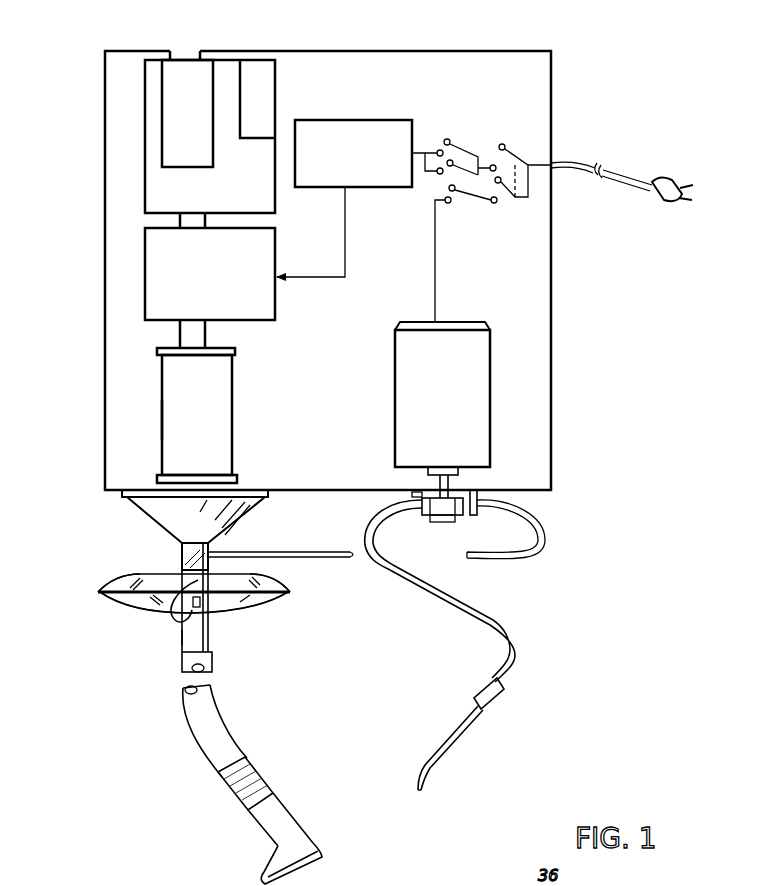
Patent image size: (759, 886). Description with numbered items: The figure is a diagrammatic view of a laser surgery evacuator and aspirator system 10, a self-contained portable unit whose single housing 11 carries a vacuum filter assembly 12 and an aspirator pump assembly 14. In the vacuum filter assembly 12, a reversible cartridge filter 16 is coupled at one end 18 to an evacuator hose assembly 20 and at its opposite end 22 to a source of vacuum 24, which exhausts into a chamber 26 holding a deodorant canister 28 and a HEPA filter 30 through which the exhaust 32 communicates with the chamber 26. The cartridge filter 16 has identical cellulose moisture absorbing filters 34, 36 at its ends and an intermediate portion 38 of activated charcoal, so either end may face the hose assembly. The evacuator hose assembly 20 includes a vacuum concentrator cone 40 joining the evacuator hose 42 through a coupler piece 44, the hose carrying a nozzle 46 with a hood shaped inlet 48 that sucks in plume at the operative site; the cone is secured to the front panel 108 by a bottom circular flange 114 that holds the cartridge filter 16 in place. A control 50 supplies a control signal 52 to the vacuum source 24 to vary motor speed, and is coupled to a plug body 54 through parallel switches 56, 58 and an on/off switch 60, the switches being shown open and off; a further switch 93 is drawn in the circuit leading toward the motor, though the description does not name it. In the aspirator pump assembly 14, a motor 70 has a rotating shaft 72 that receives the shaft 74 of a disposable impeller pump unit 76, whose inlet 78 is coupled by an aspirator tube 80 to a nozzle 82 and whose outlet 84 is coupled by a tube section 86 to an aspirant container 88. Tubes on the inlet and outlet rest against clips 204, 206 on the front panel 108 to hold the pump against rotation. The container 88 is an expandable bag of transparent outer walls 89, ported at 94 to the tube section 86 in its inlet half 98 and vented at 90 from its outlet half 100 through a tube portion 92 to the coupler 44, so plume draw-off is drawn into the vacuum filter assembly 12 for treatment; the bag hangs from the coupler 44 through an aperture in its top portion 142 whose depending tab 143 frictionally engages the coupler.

The laser surgery evacuator and aspirator system 10 is at (623, 647).
The housing 11 is at (557, 343).
The vacuum filter assembly 12 is at (304, 293).
The aspirator pump assembly 14 is at (500, 476).
The reversible cartridge filter 16 is at (250, 410).
The end of cartridge filter 18 is at (243, 481).
The evacuator hose assembly 20 is at (158, 693).
The opposite end of cartridge filter 22 is at (228, 340).
The source of vacuum 24 is at (210, 266).
The chamber 26 is at (210, 136).
The deodorant canister 28 is at (268, 87).
The HEPA filter 30 is at (163, 112).
The exhaust 32 is at (187, 51).
The cylindrical cellulose moisture absorbing filter 34 is at (177, 478).
The cylindrical cellulose moisture absorbing filter 36 is at (176, 351).
The intermediate cylindrical portion 38 is at (139, 420).
The vacuum concentrator cone 40 is at (157, 521).
The evacuator hose 42 is at (213, 722).
The coupler piece 44 is at (226, 560).
The nozzle 46 is at (309, 823).
The hood shaped inlet 48 is at (298, 870).
The control 50 is at (369, 153).
The control signal 52 is at (327, 232).
The plug body 54 is at (670, 178).
The switch 56 is at (450, 139).
The switch 58 is at (463, 157).
The on/off switch 60 is at (514, 146).
The motor 70 is at (442, 394).
The rotating shaft 72 is at (428, 482).
The shaft of impeller pump unit 74 is at (410, 494).
The disposable impeller pump unit 76 is at (445, 536).
The inlet 78 is at (410, 510).
The aspirator tube 80 is at (482, 625).
The nozzle 82 is at (503, 703).
The outlet 84 is at (485, 508).
The tube section 86 is at (333, 549).
The aspirant container 88 is at (150, 617).
The outer walls 89 is at (137, 574).
The vent 90 is at (183, 638).
The tube portion 92 is at (208, 605).
The motor switch 93 is at (463, 204).
The port 94 is at (182, 558).
The inlet half 98 is at (275, 587).
The outlet half 100 is at (245, 600).
The front panel 108 is at (311, 493).
The bottom circular flange 114 is at (169, 501).
The top portion of bag 142 is at (125, 605).
The depending tab 143 is at (228, 605).
The clip 204 is at (398, 568).
The clip 206 is at (490, 498).